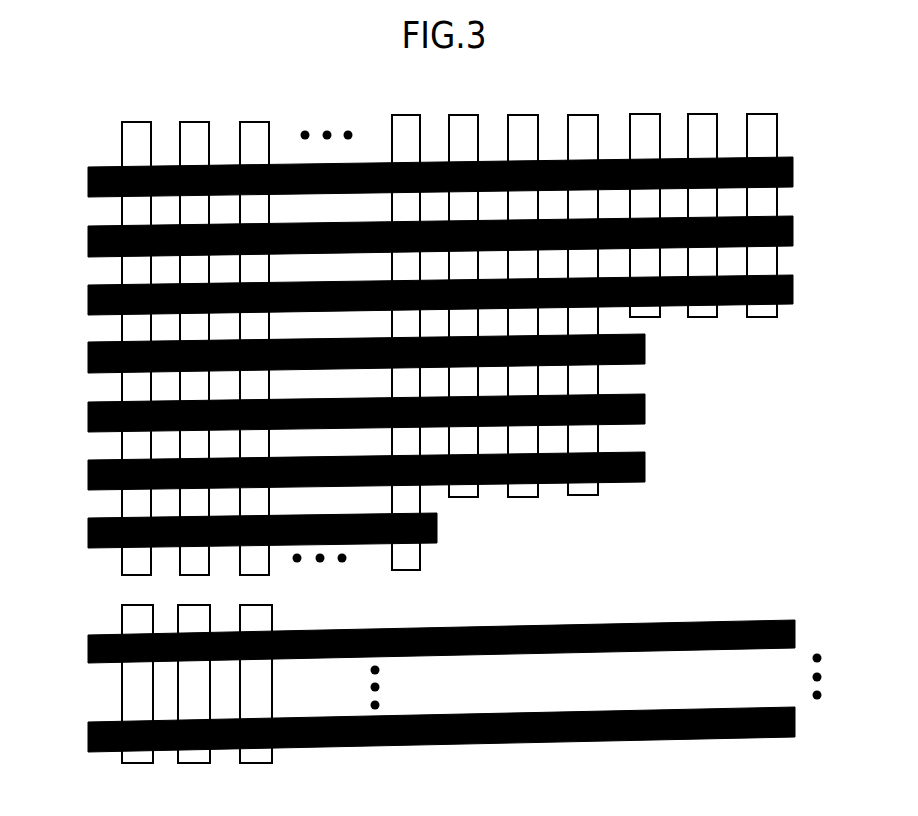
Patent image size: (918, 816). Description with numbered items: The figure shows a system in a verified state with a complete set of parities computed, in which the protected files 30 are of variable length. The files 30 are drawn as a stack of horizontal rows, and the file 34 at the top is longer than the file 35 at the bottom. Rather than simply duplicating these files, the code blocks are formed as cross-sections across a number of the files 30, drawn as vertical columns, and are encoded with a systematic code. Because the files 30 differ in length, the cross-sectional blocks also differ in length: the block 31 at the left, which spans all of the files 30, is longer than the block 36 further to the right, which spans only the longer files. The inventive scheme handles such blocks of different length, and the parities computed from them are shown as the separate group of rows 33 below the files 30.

The files 30 is at (441, 354).
The block 31 is at (122, 563).
The array of check rows 33 is at (88, 617).
The file 34 is at (795, 162).
The file 35 is at (385, 543).
The block 36 is at (420, 558).